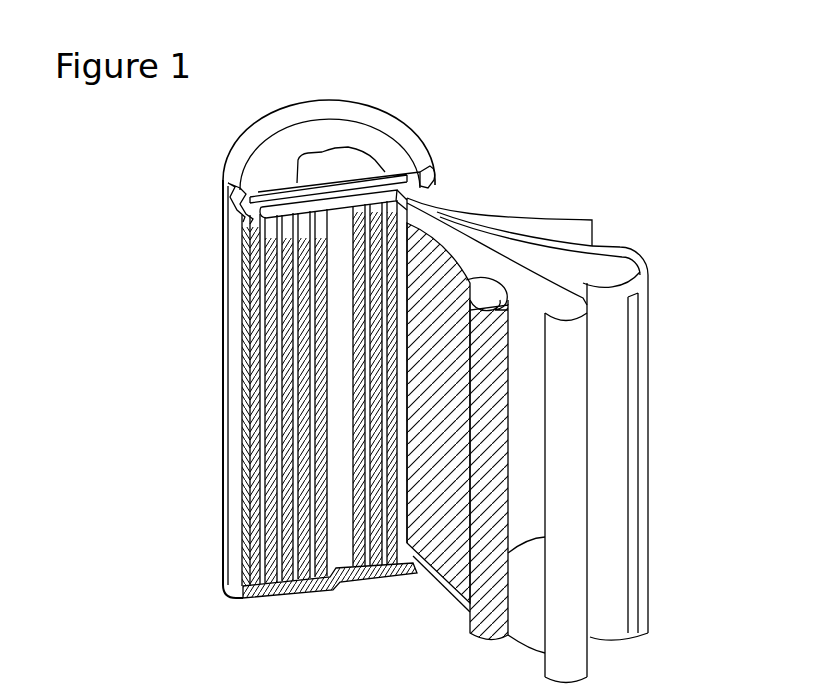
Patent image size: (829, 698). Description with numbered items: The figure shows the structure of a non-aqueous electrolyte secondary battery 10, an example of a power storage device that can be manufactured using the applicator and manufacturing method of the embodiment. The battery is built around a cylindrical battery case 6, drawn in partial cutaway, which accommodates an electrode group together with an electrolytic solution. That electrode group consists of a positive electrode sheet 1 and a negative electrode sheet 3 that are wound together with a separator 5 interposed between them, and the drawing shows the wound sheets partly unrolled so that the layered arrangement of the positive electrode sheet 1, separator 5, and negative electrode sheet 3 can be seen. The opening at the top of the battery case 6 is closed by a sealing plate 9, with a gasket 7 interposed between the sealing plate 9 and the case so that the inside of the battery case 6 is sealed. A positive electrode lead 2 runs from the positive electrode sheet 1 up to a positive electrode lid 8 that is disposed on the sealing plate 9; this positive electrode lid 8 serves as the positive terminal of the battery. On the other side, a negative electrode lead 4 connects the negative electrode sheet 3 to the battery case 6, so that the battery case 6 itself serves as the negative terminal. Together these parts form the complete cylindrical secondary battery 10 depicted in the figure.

The positive electrode sheet 1 is at (547, 535).
The positive electrode lead 2 is at (440, 189).
The negative electrode sheet 3 is at (648, 335).
The negative electrode lead 4 is at (637, 410).
The separator 5 is at (538, 283).
The battery case 6 is at (248, 413).
The gasket 7 is at (223, 185).
The positive electrode lid 8 is at (345, 128).
The sealing plate 9 is at (379, 142).
The non-aqueous electrolyte secondary battery 10 is at (470, 136).